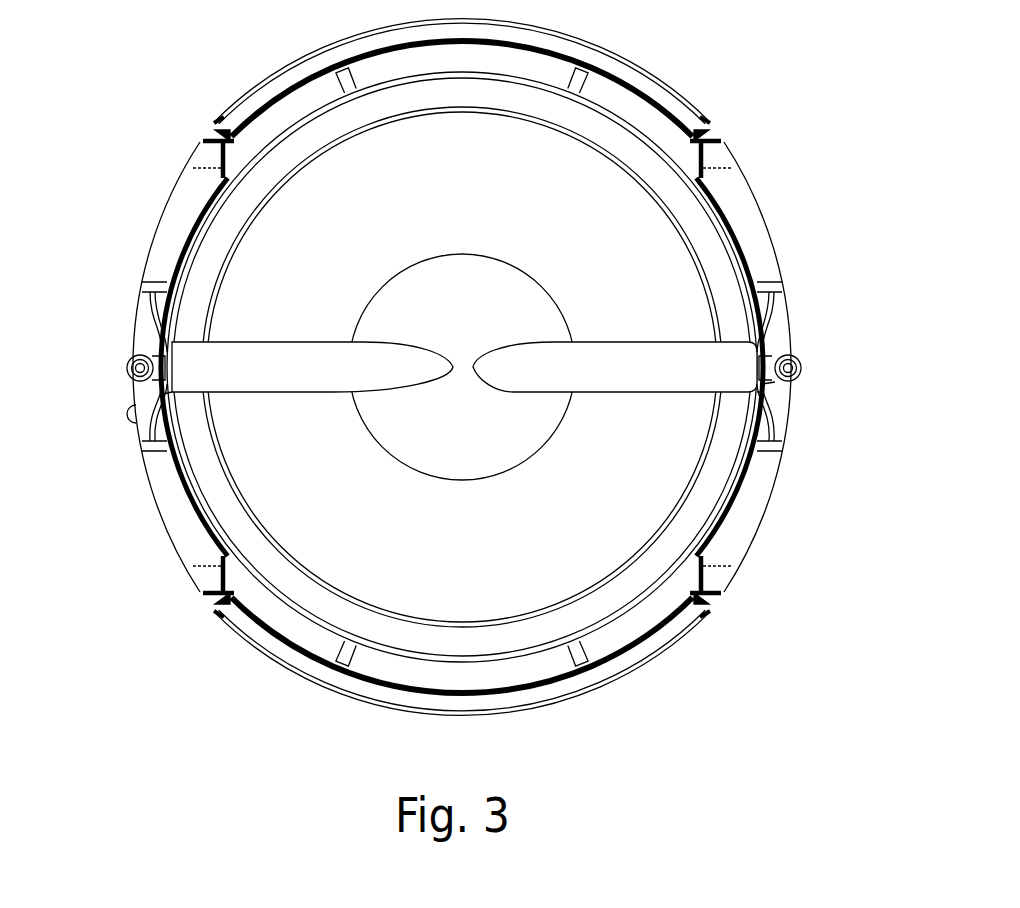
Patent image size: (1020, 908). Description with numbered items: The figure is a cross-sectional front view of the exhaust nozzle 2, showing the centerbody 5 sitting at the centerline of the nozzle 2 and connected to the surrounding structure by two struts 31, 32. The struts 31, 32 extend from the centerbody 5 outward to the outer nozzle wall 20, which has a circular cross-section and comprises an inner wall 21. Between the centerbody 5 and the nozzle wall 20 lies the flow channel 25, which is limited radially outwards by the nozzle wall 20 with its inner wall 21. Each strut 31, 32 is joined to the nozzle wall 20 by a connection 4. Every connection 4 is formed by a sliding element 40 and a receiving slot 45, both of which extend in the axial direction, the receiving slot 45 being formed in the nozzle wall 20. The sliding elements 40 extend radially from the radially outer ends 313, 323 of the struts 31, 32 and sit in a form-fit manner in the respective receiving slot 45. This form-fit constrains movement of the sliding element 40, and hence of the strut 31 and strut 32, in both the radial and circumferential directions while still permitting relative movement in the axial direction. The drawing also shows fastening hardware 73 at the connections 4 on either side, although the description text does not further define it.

The nozzle 2 is at (703, 84).
The connection 4 is at (156, 347).
The centerbody 5 is at (520, 479).
The outer nozzle wall 20 is at (655, 174).
The inner wall 21 is at (692, 243).
The flow channel 25 is at (501, 196).
The strut 31 is at (302, 396).
The strut 32 is at (633, 398).
The sliding element 40 is at (775, 382).
The receiving slot 45 is at (163, 388).
The screw 73 is at (127, 370).
The radially outer end 313 is at (163, 394).
The radially outer end 323 is at (763, 392).